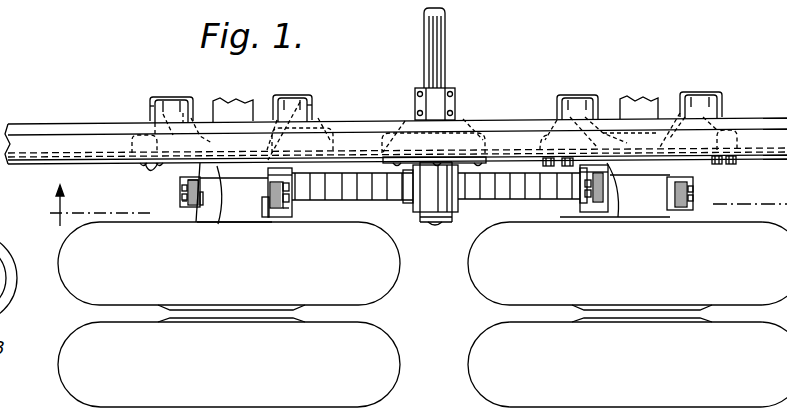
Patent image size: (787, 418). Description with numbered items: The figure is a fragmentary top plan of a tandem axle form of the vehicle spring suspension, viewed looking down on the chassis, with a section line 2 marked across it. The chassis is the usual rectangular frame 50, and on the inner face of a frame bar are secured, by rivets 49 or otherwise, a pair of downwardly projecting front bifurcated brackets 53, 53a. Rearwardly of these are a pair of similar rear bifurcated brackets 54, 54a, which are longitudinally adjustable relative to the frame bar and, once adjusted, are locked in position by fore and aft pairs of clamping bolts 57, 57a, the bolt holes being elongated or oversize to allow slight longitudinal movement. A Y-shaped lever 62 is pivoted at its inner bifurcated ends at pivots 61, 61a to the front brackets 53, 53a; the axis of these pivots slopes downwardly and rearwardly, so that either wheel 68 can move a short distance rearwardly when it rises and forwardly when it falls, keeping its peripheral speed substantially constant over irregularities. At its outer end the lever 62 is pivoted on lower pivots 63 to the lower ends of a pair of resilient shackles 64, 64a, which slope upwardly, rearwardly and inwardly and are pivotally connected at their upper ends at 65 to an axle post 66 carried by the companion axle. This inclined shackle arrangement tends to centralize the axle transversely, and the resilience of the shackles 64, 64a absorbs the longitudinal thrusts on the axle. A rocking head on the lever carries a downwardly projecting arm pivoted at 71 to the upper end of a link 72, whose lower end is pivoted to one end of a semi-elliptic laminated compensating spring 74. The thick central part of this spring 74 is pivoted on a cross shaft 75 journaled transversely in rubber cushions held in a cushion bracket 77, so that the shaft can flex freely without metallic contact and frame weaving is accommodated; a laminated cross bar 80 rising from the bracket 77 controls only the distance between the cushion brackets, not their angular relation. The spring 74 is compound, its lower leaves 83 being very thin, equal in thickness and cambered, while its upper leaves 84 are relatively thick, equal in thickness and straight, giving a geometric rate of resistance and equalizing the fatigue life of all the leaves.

The section line 2- 2 is at (407, 205).
The rivets 49 is at (147, 170).
The rectangular frame 50 is at (73, 114).
The front bifurcated bracket 53 is at (162, 97).
The front bifurcated bracket 53a is at (300, 97).
The rear bifurcated bracket 54 is at (556, 97).
The rear bifurcated bracket 54a is at (720, 95).
The clamping bolts 57 is at (548, 166).
The clamping bolts 57a is at (730, 165).
The pivot 61 is at (150, 106).
The pivot 61a is at (312, 106).
The Y-shaped lever 62 is at (178, 97).
The lower pivots 63 is at (185, 192).
The resilient shackle 64 is at (190, 206).
The resilient shackle 64a is at (266, 218).
The upper pivot 65 is at (187, 183).
The axle post 66 is at (232, 222).
The wheel 68 is at (88, 330).
The pivot 71 is at (285, 212).
The link 72 is at (292, 215).
The semi-elliptic compensating spring 74 is at (375, 205).
The cross shaft 75 is at (440, 224).
The cushion bracket 77 is at (458, 118).
The laminated cross bar 80 is at (432, 80).
The lower leaves 83 is at (578, 200).
The upper leaves 84 is at (533, 200).